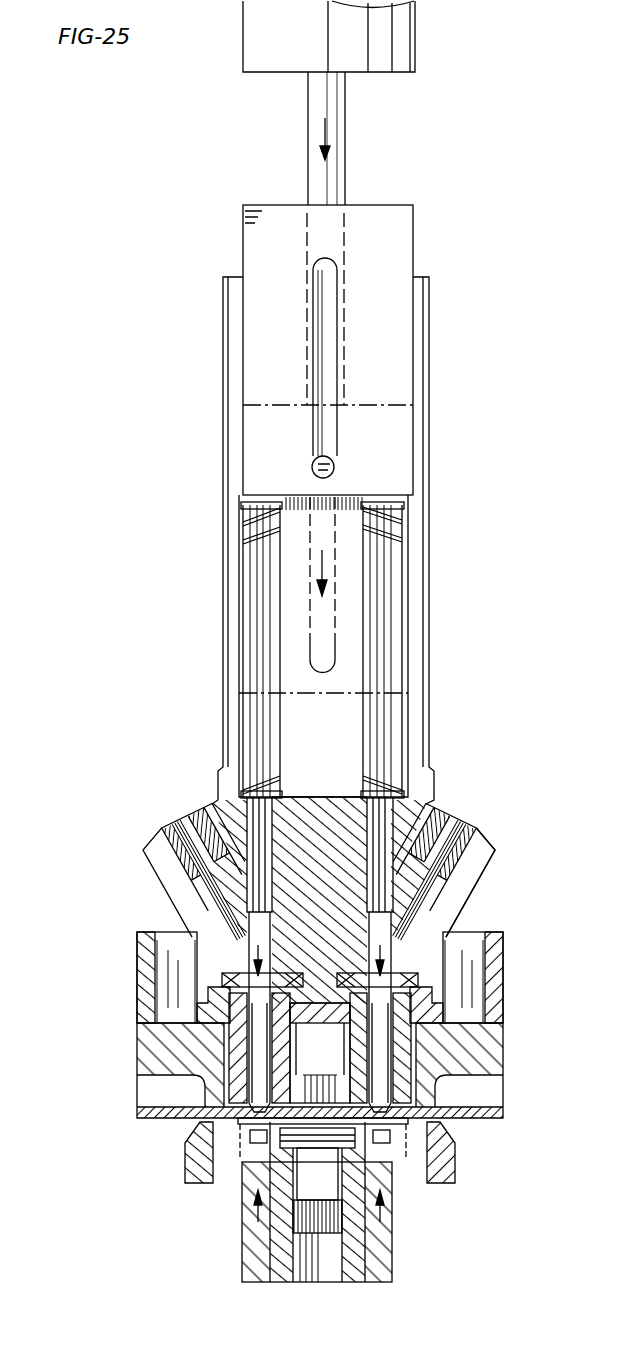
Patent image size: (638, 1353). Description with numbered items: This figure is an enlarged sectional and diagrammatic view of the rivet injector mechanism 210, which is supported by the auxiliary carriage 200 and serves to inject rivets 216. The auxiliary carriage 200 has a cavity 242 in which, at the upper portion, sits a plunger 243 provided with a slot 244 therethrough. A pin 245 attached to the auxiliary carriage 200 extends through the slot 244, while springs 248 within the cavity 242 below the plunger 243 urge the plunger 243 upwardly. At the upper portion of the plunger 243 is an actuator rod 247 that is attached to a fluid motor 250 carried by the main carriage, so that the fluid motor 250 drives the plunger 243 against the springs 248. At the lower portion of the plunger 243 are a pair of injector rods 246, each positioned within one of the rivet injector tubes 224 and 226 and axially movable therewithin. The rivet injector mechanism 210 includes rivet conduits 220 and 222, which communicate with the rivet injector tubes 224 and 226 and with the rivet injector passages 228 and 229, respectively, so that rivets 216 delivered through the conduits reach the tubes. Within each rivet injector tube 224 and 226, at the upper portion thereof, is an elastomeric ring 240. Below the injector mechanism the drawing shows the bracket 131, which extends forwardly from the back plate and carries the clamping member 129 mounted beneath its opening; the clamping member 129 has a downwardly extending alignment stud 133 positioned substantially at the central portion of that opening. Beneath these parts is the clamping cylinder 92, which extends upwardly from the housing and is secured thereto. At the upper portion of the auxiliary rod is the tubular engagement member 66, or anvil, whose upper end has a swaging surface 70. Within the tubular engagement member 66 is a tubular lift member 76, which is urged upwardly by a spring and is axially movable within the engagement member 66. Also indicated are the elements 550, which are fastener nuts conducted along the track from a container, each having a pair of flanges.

The fluid motor 250 is at (292, 52).
The actuator rod 247 is at (313, 124).
The plunger 243 is at (287, 261).
The slot 244 is at (316, 335).
The pin 245 is at (315, 462).
The auxiliary carriage 200 is at (215, 541).
The cavity 242 is at (290, 636).
The injector rods 246 is at (376, 733).
The springs 248 is at (267, 504).
The rivet conduit 220 is at (187, 812).
The rivet conduit 222 is at (463, 828).
The rivet injector mechanism 210 is at (490, 857).
The rivet injector passage 228 is at (246, 934).
The rivet injector passage 229 is at (390, 937).
The elastomeric ring 240 is at (365, 975).
The rivets 216 is at (222, 985).
The bracket 131 is at (140, 971).
The clamping member 129 is at (140, 1046).
The rivet injector tube 224 is at (236, 1054).
The rivet injector tube 226 is at (405, 1050).
The alignment stud 133 is at (313, 1092).
The clamping cylinder 92 is at (190, 1158).
The tubular engagement member 66 is at (391, 1248).
The tubular lift member 76 is at (278, 1253).
The elements 550 is at (383, 1224).
The swaging surface 70 is at (241, 1189).